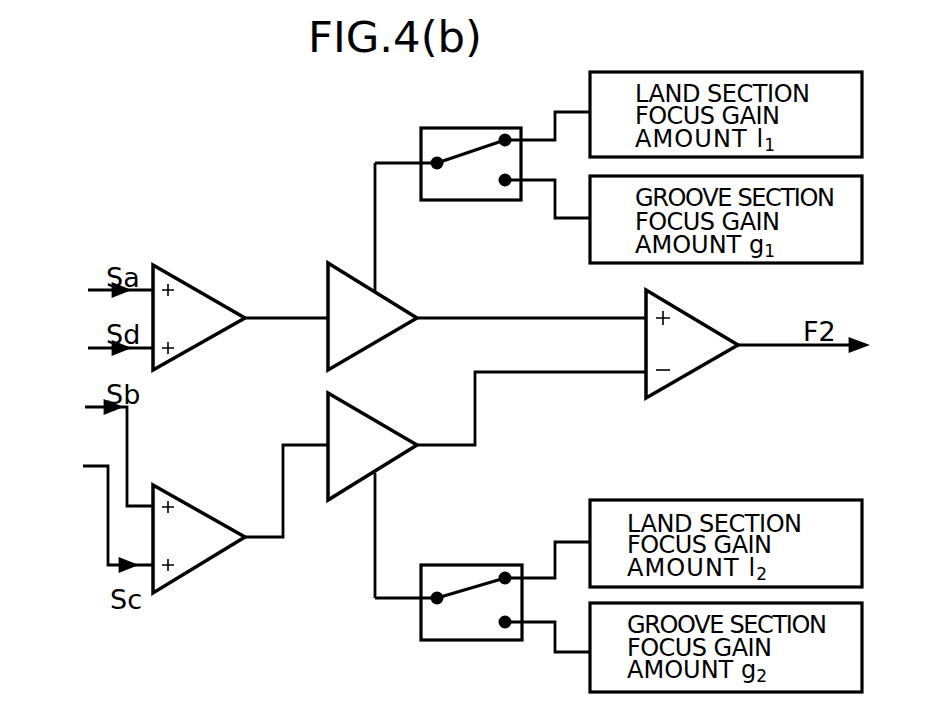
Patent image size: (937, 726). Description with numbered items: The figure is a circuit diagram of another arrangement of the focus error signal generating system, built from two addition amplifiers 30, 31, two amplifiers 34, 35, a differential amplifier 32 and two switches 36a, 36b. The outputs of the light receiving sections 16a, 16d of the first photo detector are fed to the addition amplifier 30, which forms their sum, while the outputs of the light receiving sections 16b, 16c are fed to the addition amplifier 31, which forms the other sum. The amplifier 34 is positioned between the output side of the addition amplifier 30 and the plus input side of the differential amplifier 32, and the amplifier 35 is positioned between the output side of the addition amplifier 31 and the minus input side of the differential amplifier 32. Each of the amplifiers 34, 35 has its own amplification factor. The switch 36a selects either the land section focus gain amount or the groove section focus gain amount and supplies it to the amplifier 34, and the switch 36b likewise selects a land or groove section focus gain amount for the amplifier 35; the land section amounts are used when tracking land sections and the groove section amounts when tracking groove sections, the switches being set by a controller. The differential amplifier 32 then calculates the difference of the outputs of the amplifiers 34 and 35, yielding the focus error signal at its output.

The light receiving section 16a is at (94, 291).
The light receiving section 16b is at (93, 450).
The light receiving section 16c is at (93, 512).
The light receiving section 16d is at (94, 349).
The addition amplifier 30 is at (212, 293).
The addition amplifier 31 is at (213, 481).
The differential amplifier 32 is at (700, 322).
The amplifier 34 is at (385, 340).
The amplifier 35 is at (393, 467).
The switch 36a is at (452, 128).
The switch 36b is at (452, 565).